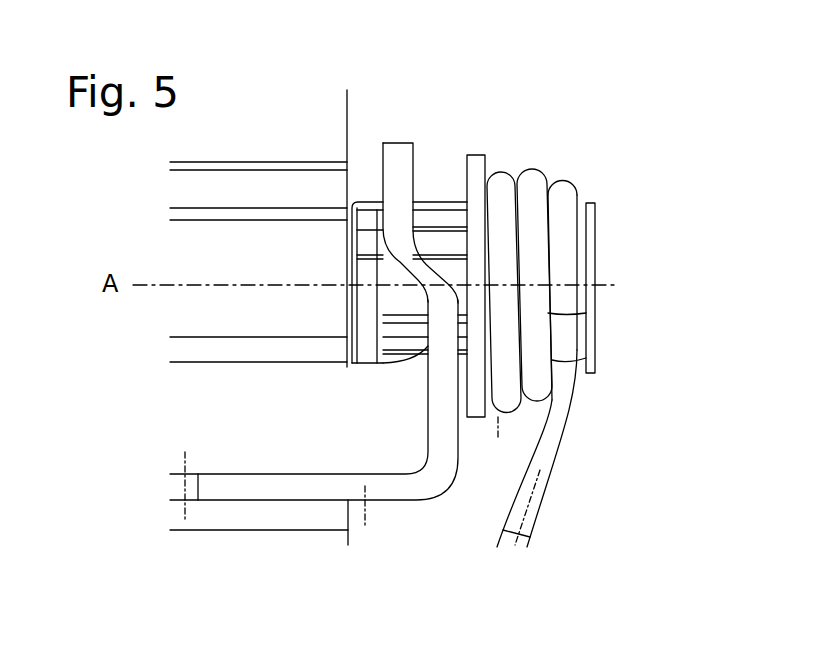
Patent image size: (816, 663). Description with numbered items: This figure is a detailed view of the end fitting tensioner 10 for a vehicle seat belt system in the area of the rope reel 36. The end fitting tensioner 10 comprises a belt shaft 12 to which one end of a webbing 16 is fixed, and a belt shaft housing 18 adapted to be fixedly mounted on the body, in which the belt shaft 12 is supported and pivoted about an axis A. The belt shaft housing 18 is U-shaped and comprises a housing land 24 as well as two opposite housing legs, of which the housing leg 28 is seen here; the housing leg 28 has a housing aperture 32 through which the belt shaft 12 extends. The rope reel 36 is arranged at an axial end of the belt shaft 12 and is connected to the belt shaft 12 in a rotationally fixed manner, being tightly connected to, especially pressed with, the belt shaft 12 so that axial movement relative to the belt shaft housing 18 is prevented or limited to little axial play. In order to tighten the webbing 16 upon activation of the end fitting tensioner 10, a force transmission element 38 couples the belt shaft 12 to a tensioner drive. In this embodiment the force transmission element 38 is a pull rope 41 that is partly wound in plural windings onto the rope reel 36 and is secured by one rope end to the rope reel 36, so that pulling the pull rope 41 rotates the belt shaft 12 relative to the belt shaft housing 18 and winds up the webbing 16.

The end fitting tensioner 10 is at (630, 108).
The belt shaft 12 is at (430, 217).
The webbing 16 is at (322, 123).
The belt shaft housing 18 is at (423, 497).
The housing land 24 is at (278, 488).
The housing leg 28 is at (397, 153).
The housing aperture 32 is at (408, 381).
The rope reel 36 is at (592, 248).
The force transmission element 38 is at (578, 358).
The pull rope 41 is at (545, 475).